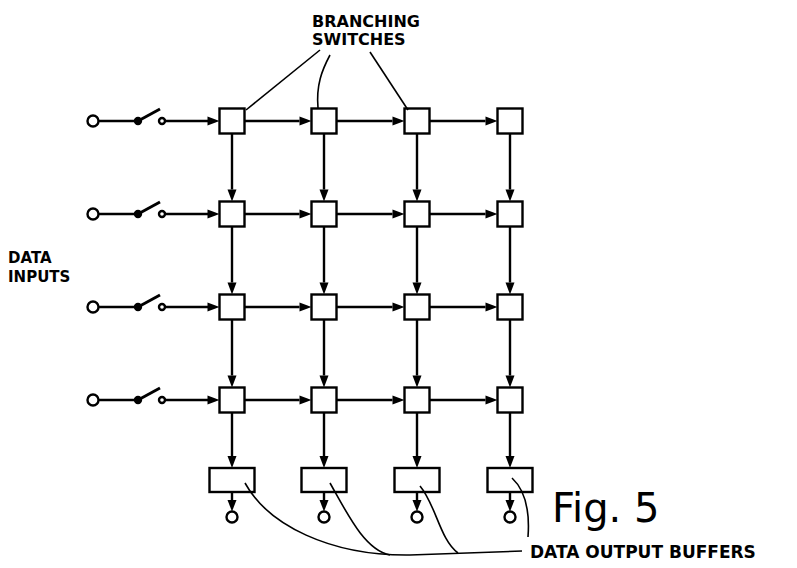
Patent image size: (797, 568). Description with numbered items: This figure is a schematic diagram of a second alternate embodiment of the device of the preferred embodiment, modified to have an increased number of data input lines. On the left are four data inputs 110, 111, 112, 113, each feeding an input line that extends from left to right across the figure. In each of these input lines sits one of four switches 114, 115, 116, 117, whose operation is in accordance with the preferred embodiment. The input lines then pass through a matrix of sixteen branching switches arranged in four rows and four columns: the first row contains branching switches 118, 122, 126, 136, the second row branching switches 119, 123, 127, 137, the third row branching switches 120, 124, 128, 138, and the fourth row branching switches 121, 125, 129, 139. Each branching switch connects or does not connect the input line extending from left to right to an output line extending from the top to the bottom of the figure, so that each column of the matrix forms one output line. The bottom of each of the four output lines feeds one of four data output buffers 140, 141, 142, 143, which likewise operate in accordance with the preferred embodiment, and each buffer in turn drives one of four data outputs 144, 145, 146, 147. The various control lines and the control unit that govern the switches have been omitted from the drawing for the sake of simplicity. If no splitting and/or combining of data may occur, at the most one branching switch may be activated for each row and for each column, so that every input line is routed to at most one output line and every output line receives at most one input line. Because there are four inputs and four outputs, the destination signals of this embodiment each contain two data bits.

The data input 110 is at (95, 126).
The data input 111 is at (95, 220).
The data input 112 is at (95, 312).
The data input 113 is at (95, 406).
The switch 114 is at (153, 104).
The switch 115 is at (153, 197).
The switch 116 is at (153, 290).
The switch 117 is at (153, 383).
The branching switch 118 is at (240, 108).
The branching switch 119 is at (245, 208).
The branching switch 120 is at (245, 301).
The branching switch 121 is at (245, 394).
The branching switch 122 is at (338, 110).
The branching switch 123 is at (337, 208).
The branching switch 124 is at (337, 301).
The branching switch 125 is at (337, 394).
The branching switch 126 is at (431, 110).
The branching switch 127 is at (430, 208).
The branching switch 128 is at (430, 301).
The branching switch 129 is at (430, 394).
The branching switch 136 is at (524, 110).
The branching switch 137 is at (523, 208).
The branching switch 138 is at (523, 301).
The branching switch 139 is at (523, 394).
The data output buffer 140 is at (253, 472).
The data output buffer 141 is at (345, 472).
The data output buffer 142 is at (438, 472).
The data output buffer 143 is at (531, 472).
The data output 144 is at (226, 517).
The data output 145 is at (319, 519).
The data output 146 is at (412, 519).
The data output 147 is at (505, 519).